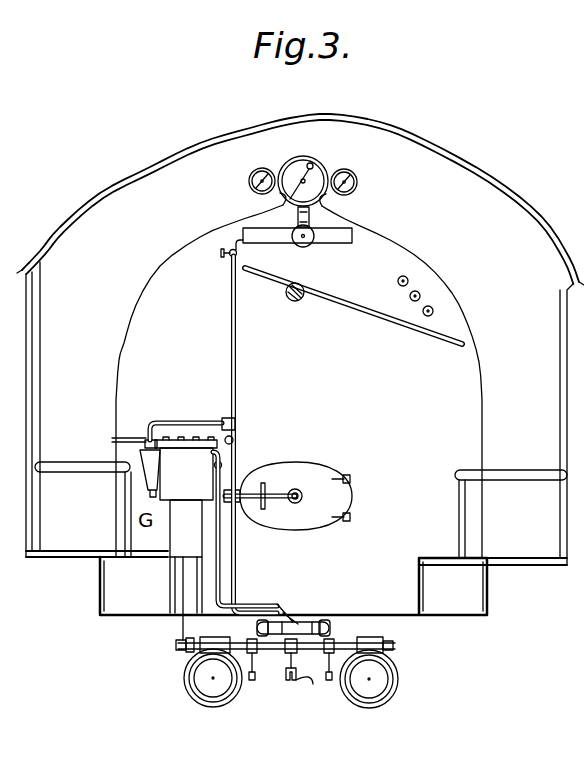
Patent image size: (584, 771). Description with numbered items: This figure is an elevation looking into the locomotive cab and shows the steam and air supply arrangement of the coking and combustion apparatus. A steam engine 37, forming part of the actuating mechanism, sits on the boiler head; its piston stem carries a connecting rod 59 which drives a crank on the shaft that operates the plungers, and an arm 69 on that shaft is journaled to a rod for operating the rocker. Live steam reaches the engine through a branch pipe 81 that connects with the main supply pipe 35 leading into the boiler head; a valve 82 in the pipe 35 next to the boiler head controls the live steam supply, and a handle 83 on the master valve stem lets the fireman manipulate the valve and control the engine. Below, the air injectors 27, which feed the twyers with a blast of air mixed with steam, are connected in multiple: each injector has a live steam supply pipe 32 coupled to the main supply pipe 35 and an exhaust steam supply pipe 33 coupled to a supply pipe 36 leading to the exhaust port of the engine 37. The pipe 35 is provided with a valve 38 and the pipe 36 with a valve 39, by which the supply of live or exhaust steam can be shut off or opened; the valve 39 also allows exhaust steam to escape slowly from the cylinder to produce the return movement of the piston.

The valve 82 is at (232, 249).
The main supply pipe 35 is at (236, 353).
The handle 83 is at (112, 440).
The steam engine 37 is at (180, 455).
The branch pipe 81 is at (206, 416).
The valve 38 is at (234, 440).
The valve 39 is at (223, 465).
The supply pipe 36 is at (220, 572).
The connecting rod 59 is at (182, 630).
The live steam supply pipe 32 is at (296, 630).
The air injector 27 is at (257, 628).
The exhaust steam supply pipe 33 is at (291, 645).
The arm 69 is at (307, 691).